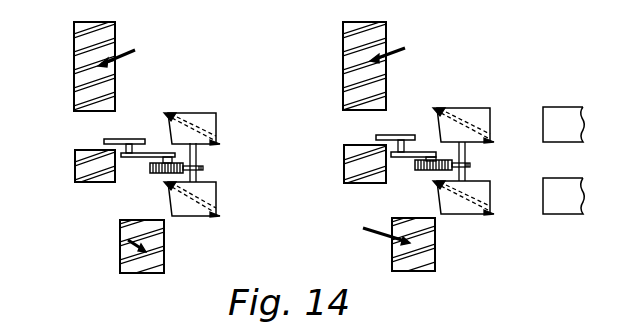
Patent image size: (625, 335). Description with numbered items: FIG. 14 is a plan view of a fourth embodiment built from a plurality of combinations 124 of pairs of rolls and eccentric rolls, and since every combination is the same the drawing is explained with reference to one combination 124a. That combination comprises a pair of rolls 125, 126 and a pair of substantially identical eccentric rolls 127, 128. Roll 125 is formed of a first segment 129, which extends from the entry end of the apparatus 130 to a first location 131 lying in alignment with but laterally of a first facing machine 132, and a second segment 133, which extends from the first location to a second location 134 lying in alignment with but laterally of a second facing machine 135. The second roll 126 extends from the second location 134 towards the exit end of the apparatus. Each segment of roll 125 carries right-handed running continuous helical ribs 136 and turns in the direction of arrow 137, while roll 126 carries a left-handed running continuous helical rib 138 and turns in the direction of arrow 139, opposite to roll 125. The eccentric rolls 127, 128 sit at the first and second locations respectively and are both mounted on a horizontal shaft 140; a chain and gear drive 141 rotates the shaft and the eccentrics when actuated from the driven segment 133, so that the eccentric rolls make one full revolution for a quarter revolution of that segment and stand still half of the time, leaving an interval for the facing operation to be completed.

The combinations 124 is at (365, 218).
The combination 124a is at (120, 249).
The roll 125 is at (116, 27).
The second roll 126 is at (165, 256).
The eccentric roll 127 is at (217, 118).
The eccentric roll 128 is at (217, 192).
The first segment 129 is at (75, 78).
The apparatus 130 is at (277, 79).
The first location 131 is at (76, 131).
The first facing machine 132 is at (545, 112).
The second segment 133 is at (75, 168).
The second location 134 is at (114, 211).
The second facing machine 135 is at (546, 208).
The right-handed running continuous helical ribs 136 is at (81, 47).
The arrow 137 is at (118, 60).
The left-handed running continuous helical rib 138 is at (165, 241).
The arrow 139 is at (118, 241).
The horizontal shaft 140 is at (203, 173).
The chain and gear drive 141 is at (156, 147).